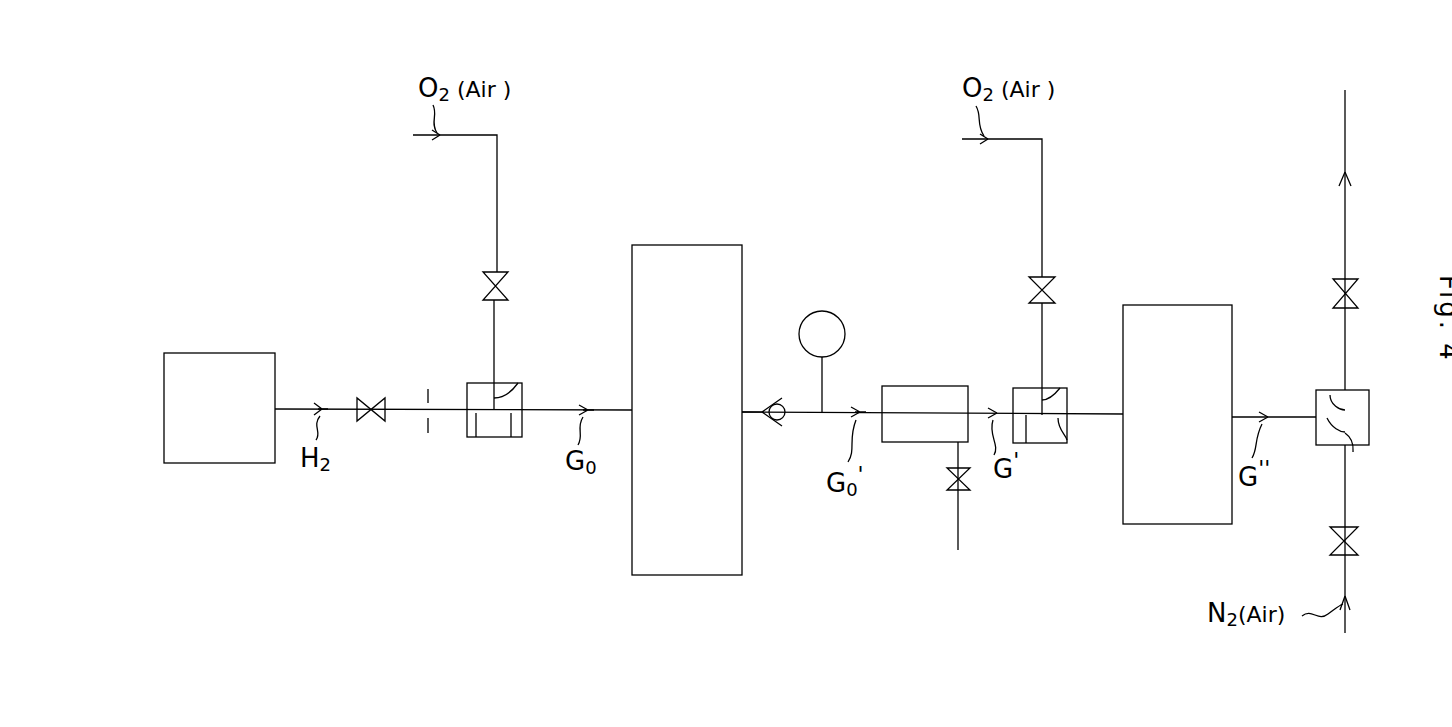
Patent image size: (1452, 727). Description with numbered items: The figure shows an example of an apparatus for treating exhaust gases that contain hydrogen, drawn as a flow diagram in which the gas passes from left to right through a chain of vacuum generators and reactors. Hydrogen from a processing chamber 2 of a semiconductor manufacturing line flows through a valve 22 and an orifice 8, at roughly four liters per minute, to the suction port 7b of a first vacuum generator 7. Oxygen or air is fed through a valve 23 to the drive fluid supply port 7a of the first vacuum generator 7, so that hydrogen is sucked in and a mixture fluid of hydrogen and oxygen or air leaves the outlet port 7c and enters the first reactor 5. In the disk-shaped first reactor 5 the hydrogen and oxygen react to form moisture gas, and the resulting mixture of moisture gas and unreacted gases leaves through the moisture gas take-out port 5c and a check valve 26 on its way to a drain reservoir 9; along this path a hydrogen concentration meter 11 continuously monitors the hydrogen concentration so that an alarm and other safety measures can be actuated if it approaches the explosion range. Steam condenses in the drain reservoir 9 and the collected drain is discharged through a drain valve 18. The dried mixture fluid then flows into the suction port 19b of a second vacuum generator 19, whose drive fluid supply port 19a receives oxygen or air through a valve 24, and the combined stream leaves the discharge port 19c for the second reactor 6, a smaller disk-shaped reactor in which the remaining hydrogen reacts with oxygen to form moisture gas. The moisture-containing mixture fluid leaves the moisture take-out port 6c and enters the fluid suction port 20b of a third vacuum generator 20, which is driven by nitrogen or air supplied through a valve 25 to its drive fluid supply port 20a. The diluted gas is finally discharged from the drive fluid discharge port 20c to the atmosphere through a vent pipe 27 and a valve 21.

The processing chamber 2 is at (237, 369).
The valve 22 is at (371, 398).
The orifice 8 is at (427, 423).
The valve 23 is at (498, 272).
The first vacuum generator 7 is at (476, 383).
The drive fluid supply port 7a is at (518, 383).
The suction port 7b is at (476, 437).
The outlet port 7c is at (511, 437).
The first reactor 5 is at (690, 245).
The moisture gas take-out port 5c is at (751, 418).
The check valve 26 is at (776, 402).
The hydrogen concentration meter 11 is at (822, 311).
The drain reservoir 9 is at (926, 386).
The drain valve 18 is at (963, 488).
The valve 24 is at (1046, 277).
The second vacuum generator 19 is at (1025, 388).
The drive fluid supply port 19a is at (1060, 388).
The suction port 19b is at (1026, 443).
The discharge port 19c is at (1067, 440).
The second reactor 6 is at (1167, 305).
The moisture take-out port 6c is at (1244, 417).
The third vacuum generator 20 is at (1315, 397).
The drive fluid supply port 20a is at (1353, 452).
The fluid suction port 20b is at (1327, 418).
The drive fluid discharge port 20c is at (1330, 395).
The vent pipe 27 is at (1345, 224).
The valve 21 is at (1342, 280).
The valve 25 is at (1338, 550).